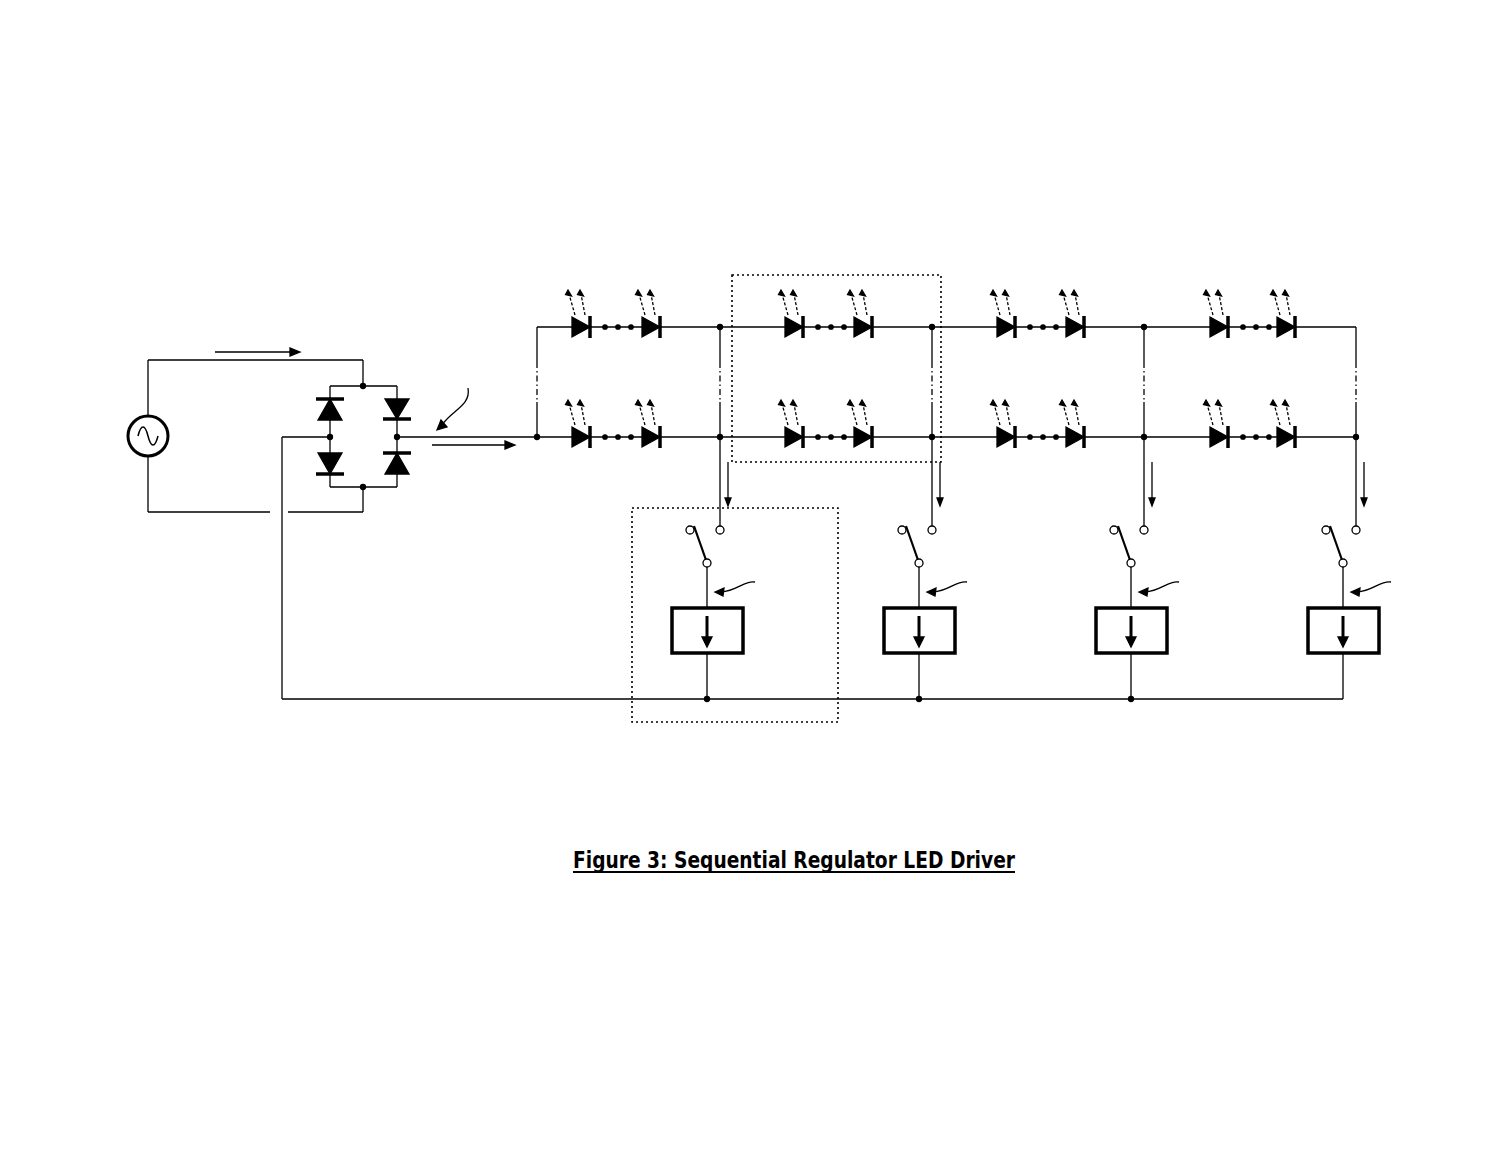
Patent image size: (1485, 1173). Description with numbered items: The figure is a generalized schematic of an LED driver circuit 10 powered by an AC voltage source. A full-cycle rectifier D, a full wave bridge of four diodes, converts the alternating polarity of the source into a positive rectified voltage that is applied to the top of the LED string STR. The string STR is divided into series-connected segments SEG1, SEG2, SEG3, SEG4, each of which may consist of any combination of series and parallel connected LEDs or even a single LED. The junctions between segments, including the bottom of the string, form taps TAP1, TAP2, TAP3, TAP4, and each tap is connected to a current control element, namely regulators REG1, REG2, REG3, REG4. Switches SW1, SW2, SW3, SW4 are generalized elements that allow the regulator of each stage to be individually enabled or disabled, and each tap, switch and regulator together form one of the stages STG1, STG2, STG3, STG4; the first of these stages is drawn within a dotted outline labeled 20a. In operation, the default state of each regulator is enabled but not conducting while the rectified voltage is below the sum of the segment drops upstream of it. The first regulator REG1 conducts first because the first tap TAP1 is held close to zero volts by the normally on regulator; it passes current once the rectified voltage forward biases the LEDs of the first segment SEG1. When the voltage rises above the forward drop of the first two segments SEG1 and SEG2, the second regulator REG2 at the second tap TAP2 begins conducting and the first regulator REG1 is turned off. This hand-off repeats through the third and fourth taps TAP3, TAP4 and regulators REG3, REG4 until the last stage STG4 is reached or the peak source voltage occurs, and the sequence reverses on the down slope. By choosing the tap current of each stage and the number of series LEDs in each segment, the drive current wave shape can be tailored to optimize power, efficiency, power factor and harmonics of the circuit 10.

The LED driver circuit 10 is at (258, 589).
The first regulator stage 20a is at (657, 578).
The full-cycle rectifier D is at (412, 502).
The LED string STR is at (527, 283).
The first segment SEG1 is at (624, 272).
The second segment SEG2 is at (839, 268).
The third segment SEG3 is at (1060, 270).
The fourth segment SEG4 is at (1277, 270).
The first tap TAP1 is at (696, 394).
The second tap TAP2 is at (908, 394).
The third tap TAP3 is at (1120, 394).
The fourth tap TAP4 is at (1332, 395).
The first switch SW1 is at (722, 543).
The second switch SW2 is at (934, 543).
The third switch SW3 is at (1146, 543).
The fourth switch SW4 is at (1358, 543).
The first regulator REG1 is at (738, 630).
The second regulator REG2 is at (950, 630).
The third regulator REG3 is at (1162, 630).
The fourth regulator REG4 is at (1374, 630).
The first stage STG1 is at (739, 562).
The second stage STG2 is at (951, 560).
The third stage STG3 is at (1163, 560).
The last stage STG4 is at (1375, 563).